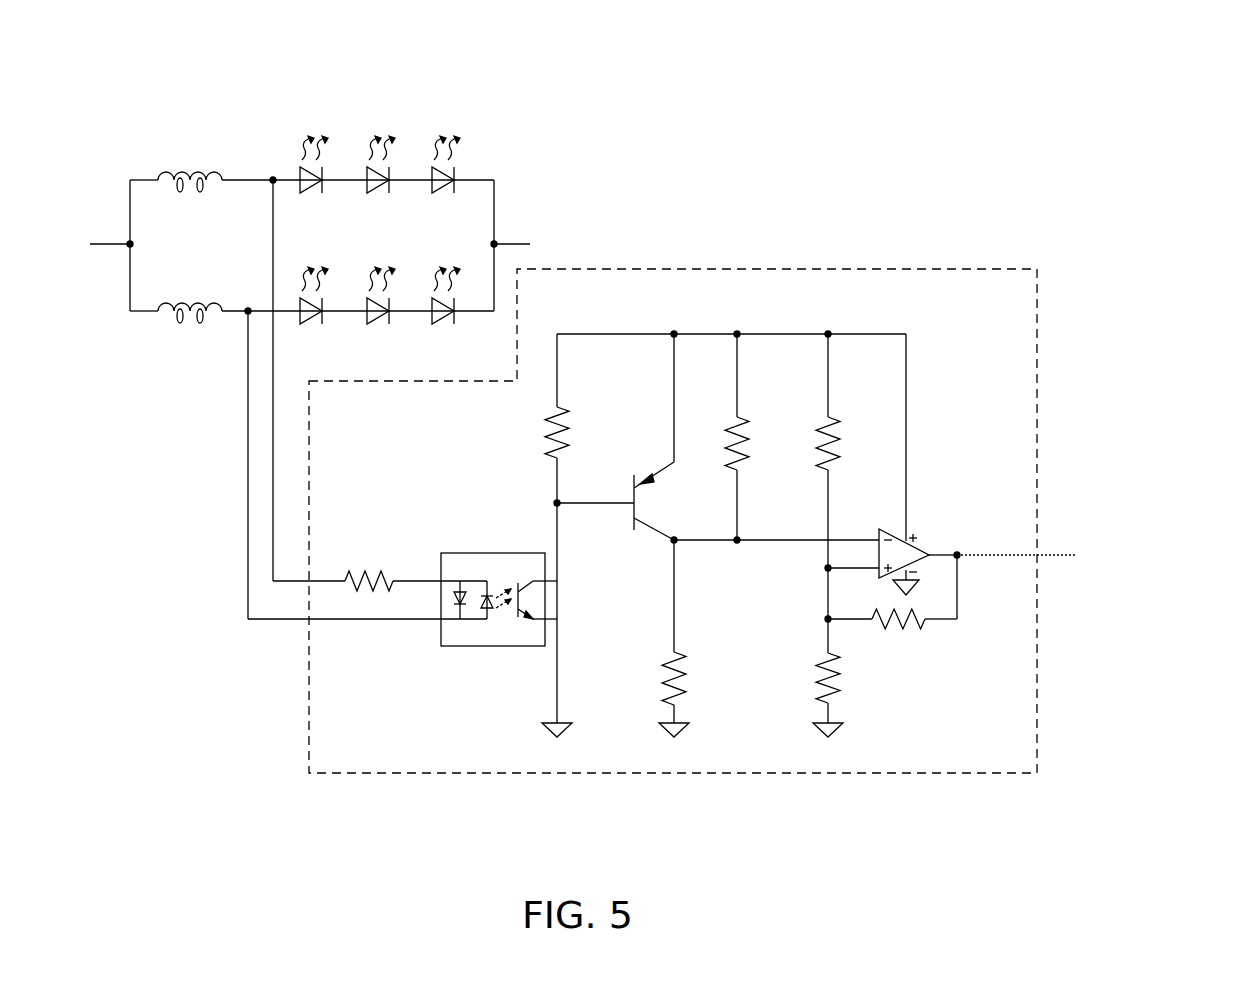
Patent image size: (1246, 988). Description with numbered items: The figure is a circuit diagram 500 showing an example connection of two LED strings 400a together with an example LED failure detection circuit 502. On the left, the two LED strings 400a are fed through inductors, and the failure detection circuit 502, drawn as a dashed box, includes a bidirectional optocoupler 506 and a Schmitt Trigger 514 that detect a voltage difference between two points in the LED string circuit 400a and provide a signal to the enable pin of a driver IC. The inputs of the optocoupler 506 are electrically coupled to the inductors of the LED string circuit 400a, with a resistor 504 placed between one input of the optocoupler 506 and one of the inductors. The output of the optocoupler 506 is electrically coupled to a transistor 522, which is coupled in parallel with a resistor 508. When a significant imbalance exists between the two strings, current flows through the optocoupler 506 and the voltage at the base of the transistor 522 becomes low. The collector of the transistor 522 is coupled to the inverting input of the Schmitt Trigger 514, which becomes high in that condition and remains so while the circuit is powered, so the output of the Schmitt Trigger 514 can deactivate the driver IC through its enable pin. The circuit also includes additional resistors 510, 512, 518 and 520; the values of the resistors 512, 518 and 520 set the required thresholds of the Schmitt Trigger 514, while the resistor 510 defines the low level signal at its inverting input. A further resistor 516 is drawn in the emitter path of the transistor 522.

The circuit diagram 500 is at (702, 37).
The connection of two LED strings 400a is at (266, 134).
The LED failure detection circuit 502 is at (921, 267).
The resistor 504 is at (381, 575).
The bidirectional optocoupler 506 is at (483, 644).
The resistor 508 is at (571, 437).
The resistor 510 is at (745, 423).
The resistor 512 is at (835, 423).
The Schmitt Trigger 514 is at (921, 549).
The resistor R5 516 is at (672, 660).
The resistor 518 is at (834, 694).
The resistor 520 is at (921, 629).
The transistor 522 is at (662, 528).